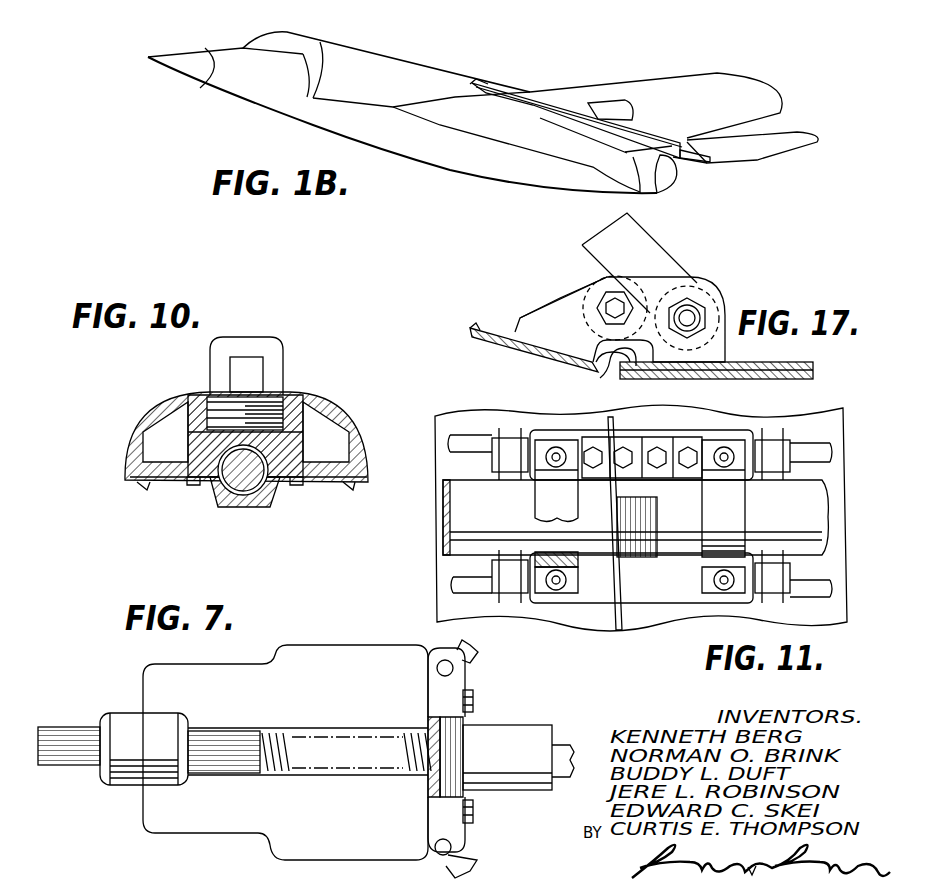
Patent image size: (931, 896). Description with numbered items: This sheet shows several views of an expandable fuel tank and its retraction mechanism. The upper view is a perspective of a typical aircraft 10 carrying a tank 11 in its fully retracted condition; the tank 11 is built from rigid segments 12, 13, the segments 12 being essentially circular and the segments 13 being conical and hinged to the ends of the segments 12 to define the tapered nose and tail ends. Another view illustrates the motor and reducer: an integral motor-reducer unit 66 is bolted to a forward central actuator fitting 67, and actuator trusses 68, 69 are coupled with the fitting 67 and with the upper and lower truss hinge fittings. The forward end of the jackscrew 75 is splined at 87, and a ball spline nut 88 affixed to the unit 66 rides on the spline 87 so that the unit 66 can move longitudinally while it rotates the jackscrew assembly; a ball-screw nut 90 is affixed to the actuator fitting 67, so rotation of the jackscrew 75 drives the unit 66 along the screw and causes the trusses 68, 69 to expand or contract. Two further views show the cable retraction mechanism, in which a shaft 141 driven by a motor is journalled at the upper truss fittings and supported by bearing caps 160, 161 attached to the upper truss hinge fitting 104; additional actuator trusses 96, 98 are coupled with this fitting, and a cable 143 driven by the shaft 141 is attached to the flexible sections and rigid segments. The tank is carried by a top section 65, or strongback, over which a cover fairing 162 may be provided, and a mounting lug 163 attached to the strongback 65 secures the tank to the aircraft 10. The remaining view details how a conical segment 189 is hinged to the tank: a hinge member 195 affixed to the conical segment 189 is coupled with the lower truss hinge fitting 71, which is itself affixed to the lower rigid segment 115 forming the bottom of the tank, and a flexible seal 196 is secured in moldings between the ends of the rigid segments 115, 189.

In FIG. 1B, the aircraft 10 is at (388, 72).
In FIG. 1B, the tank 11 is at (632, 157).
In FIG. 1B, the rigid segments 12 is at (570, 113).
In FIG. 1B, the rigid segments 13 is at (497, 84).
In FIG. 10, the top section 65 is at (124, 460).
In FIG. 11, the top section 65 is at (433, 587).
In FIG. 7, the motor-reducer unit 66 is at (203, 843).
In FIG. 7, the central actuator fitting 67 is at (458, 702).
In FIG. 7, the actuator truss 68 is at (471, 663).
In FIG. 17, the actuator truss 69 is at (642, 252).
In FIG. 7, the actuator truss 69 is at (466, 860).
In FIG. 17, the lower truss hinge fitting 71 is at (662, 288).
In FIG. 7, the jackscrew 75 is at (563, 746).
In FIG. 7, the spline 87 is at (58, 737).
In FIG. 7, the ball spline nut 88 is at (120, 718).
In FIG. 7, the ball-screw nut 90 is at (538, 782).
In FIG. 11, the actuator truss 96 is at (463, 438).
In FIG. 11, the actuator truss 98 is at (813, 448).
In FIG. 11, the upper truss hinge fitting 104 is at (593, 597).
In FIG. 17, the lower rigid segment 115 is at (770, 381).
In FIG. 10, the shaft 141 is at (228, 482).
In FIG. 11, the shaft 141 is at (635, 517).
In FIG. 11, the cable 143 is at (617, 423).
In FIG. 10, the bearing cap 160 is at (262, 508).
In FIG. 11, the bearing cap 160 is at (542, 495).
In FIG. 11, the bearing cap 161 is at (700, 558).
In FIG. 10, the cover fairing 162 is at (310, 398).
In FIG. 10, the mounting lug 163 is at (277, 370).
In FIG. 17, the conical segment 189 is at (483, 330).
In FIG. 17, the hinge member 195 is at (547, 315).
In FIG. 17, the flexible seal 196 is at (606, 372).